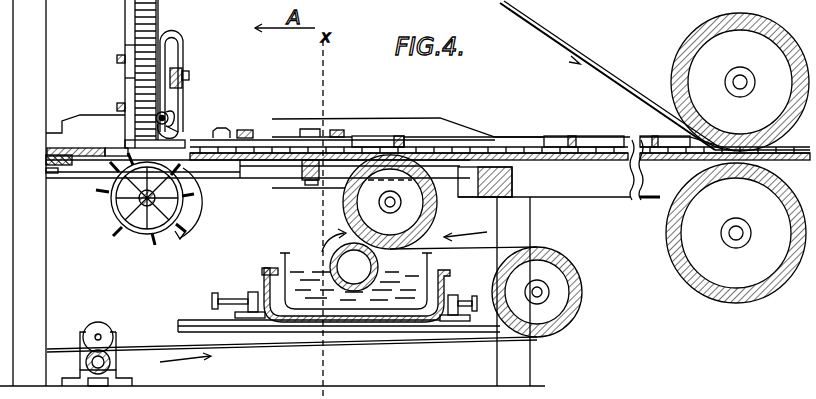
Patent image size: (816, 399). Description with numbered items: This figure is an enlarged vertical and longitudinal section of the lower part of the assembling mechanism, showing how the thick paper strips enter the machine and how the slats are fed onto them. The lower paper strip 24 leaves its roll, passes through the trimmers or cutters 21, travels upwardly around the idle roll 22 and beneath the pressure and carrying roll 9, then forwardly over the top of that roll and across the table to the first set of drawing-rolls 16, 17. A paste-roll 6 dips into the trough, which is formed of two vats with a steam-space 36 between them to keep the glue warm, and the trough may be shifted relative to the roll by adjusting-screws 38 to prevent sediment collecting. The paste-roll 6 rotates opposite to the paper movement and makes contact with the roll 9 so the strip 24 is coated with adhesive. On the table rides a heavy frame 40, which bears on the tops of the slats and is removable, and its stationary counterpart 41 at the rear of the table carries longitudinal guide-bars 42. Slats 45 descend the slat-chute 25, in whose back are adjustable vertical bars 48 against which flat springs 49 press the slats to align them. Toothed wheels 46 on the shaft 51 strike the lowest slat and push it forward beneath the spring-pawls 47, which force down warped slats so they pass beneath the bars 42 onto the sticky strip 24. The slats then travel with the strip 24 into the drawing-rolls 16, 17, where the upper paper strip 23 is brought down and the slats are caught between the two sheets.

The slat-chute 25 is at (132, 20).
The flat springs 49 is at (158, 72).
The spring-pawls 47 is at (175, 122).
The guide-bars 42 is at (200, 143).
The stationary frame portion 41 is at (270, 140).
The vertical bars 48 is at (130, 78).
The heavy frame 40 is at (454, 143).
The paper strip 24 is at (538, 150).
The paper strip 23 is at (629, 82).
The drawing-roll 16 is at (706, 36).
The drawing-roll 17 is at (705, 224).
The pressure and carrying roll 9 is at (390, 202).
The slats 45 is at (289, 150).
The shaft 51 is at (120, 208).
The toothed wheels 46 is at (149, 212).
The paste-roll 6 is at (330, 255).
The steam-space 36 is at (270, 286).
The adjusting-screws 38 is at (267, 301).
The idle roll 22 is at (584, 290).
The trimmers or cutters 21 is at (113, 325).